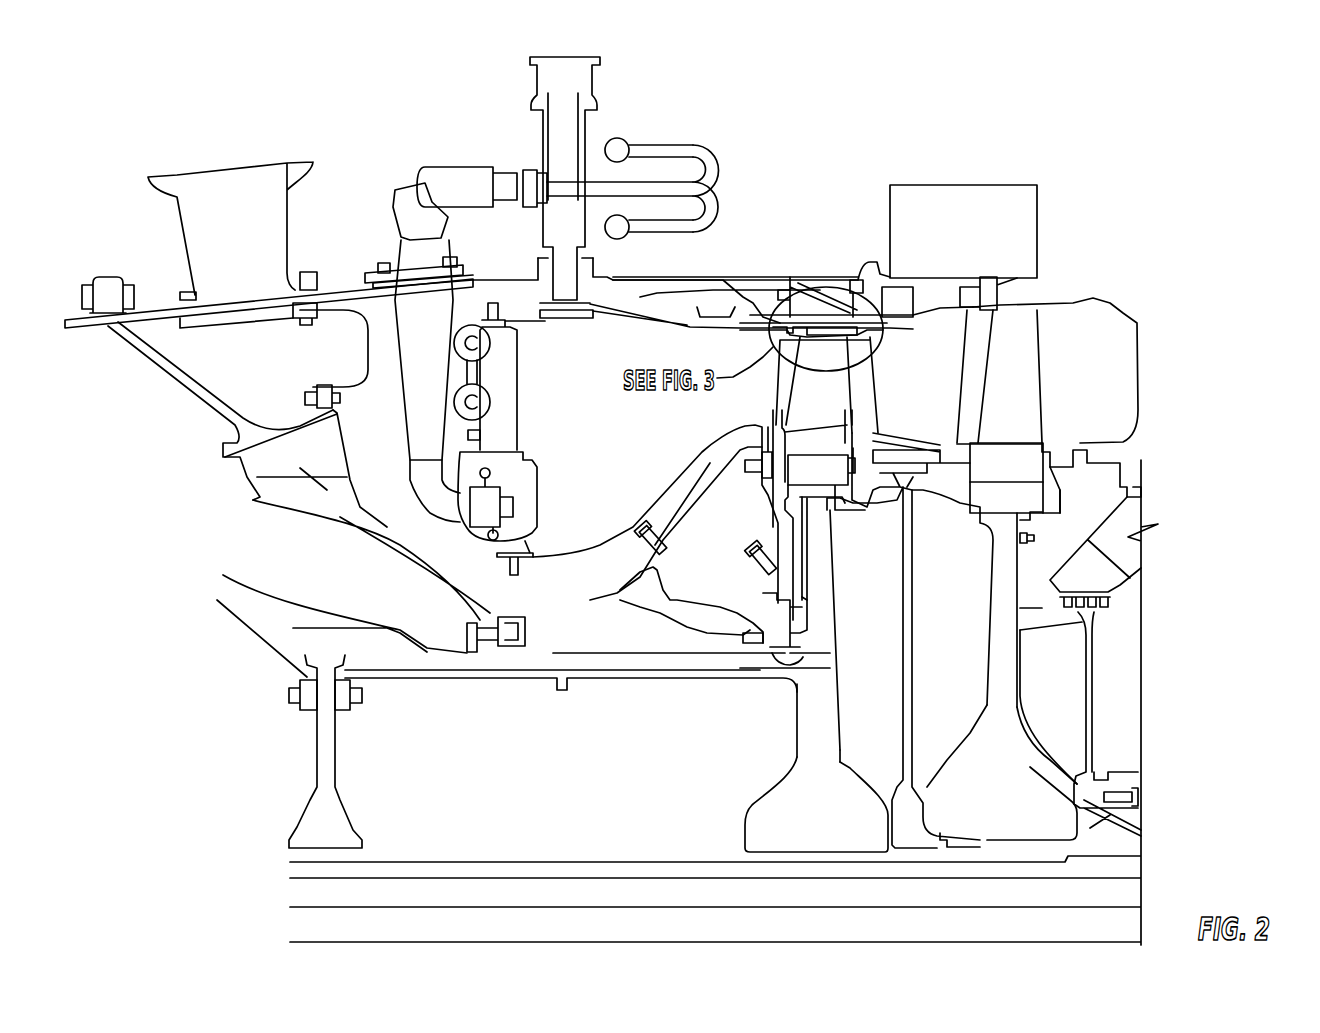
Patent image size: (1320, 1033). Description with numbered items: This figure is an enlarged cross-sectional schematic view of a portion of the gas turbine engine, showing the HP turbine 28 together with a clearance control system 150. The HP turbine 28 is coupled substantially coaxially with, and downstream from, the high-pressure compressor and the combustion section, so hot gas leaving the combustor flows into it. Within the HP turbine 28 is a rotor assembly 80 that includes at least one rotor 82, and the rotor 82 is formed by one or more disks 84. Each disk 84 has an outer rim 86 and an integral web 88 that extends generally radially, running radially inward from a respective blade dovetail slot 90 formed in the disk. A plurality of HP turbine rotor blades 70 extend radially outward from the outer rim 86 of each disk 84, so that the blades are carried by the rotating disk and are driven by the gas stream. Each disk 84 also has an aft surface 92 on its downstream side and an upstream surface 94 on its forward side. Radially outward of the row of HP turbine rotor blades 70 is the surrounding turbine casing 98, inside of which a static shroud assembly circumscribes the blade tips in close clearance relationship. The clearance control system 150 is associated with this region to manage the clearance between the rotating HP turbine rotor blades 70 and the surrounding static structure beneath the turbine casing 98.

The HP turbine 28 is at (637, 723).
The HP turbine rotor blades 70 is at (837, 408).
The rotor assembly 80 is at (902, 886).
The rotor 82 is at (903, 543).
The disk 84 is at (768, 728).
The outer rim 86 is at (853, 430).
The integral web 88 is at (828, 703).
The blade dovetail slot 90 is at (1040, 485).
The aft surface 92 is at (840, 678).
The upstream surface 94 is at (752, 807).
The turbine casing 98 is at (873, 260).
The clearance control system 150 is at (981, 241).